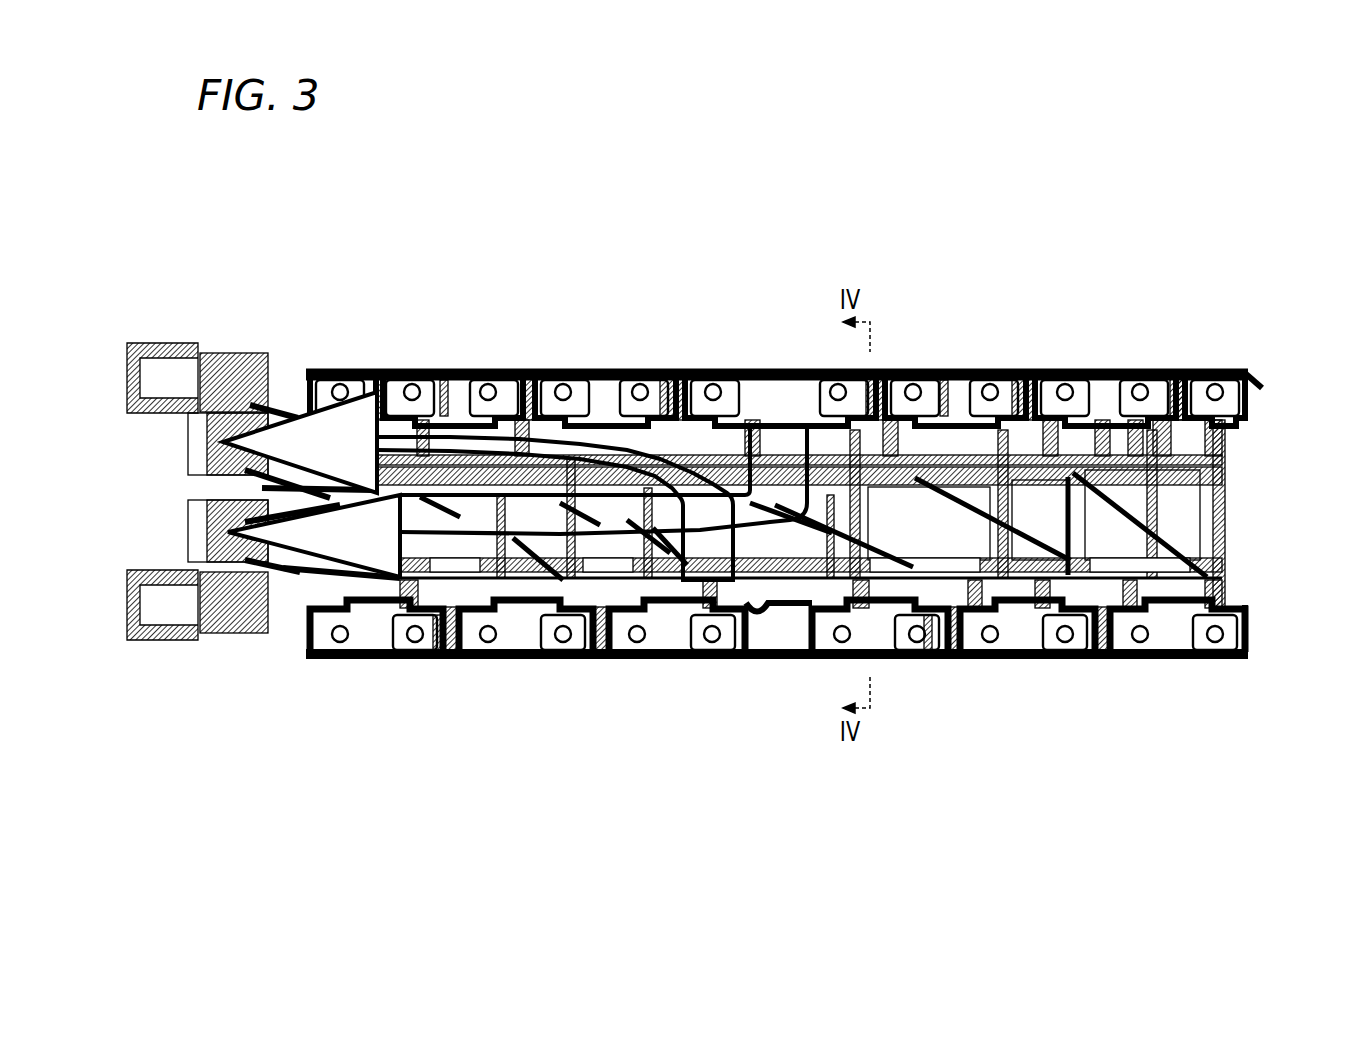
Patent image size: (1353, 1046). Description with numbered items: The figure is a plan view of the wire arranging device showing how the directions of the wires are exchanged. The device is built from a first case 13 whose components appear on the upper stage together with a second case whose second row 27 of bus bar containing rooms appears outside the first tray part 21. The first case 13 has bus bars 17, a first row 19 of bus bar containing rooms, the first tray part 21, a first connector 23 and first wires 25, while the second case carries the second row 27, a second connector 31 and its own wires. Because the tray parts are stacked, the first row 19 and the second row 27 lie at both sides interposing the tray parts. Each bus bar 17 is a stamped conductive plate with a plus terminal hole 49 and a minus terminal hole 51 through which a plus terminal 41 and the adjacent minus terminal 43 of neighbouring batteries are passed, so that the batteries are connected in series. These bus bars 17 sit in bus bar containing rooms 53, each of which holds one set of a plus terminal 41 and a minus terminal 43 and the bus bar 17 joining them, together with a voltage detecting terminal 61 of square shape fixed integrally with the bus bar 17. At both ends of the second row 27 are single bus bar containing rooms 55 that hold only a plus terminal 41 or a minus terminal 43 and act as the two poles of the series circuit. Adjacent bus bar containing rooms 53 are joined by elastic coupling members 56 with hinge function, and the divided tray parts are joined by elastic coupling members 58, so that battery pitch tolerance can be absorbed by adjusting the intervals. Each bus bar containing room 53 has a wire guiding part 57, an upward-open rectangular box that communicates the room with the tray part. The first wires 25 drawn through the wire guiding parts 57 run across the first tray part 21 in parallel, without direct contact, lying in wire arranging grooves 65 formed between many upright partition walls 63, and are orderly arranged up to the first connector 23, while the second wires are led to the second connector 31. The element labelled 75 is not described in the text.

The first case 13 is at (1240, 667).
The bus bar 17 is at (620, 372).
The first row of bus bar containing rooms 19 is at (303, 738).
The first tray part 21 is at (1225, 483).
The first connector 23 is at (183, 455).
The first wires 25 is at (1173, 530).
The second row of bus bar containing rooms 27 is at (385, 265).
The second connector 31 is at (185, 517).
The plus terminal 41 is at (364, 372).
The minus terminal 43 is at (446, 372).
The plus terminal hole 49 is at (341, 372).
The minus terminal hole 51 is at (424, 372).
The bus bar containing room 53 is at (1200, 305).
The single bus bar containing room 55 is at (310, 372).
The elastic coupling member 56 is at (977, 648).
The wire guiding part 57 is at (753, 370).
The elastic coupling member 58 is at (1050, 372).
The voltage detecting terminal 61 is at (948, 372).
The partition wall 63 is at (1103, 376).
The wire arranging groove 65 is at (1083, 487).
The locking tab 75 is at (890, 372).